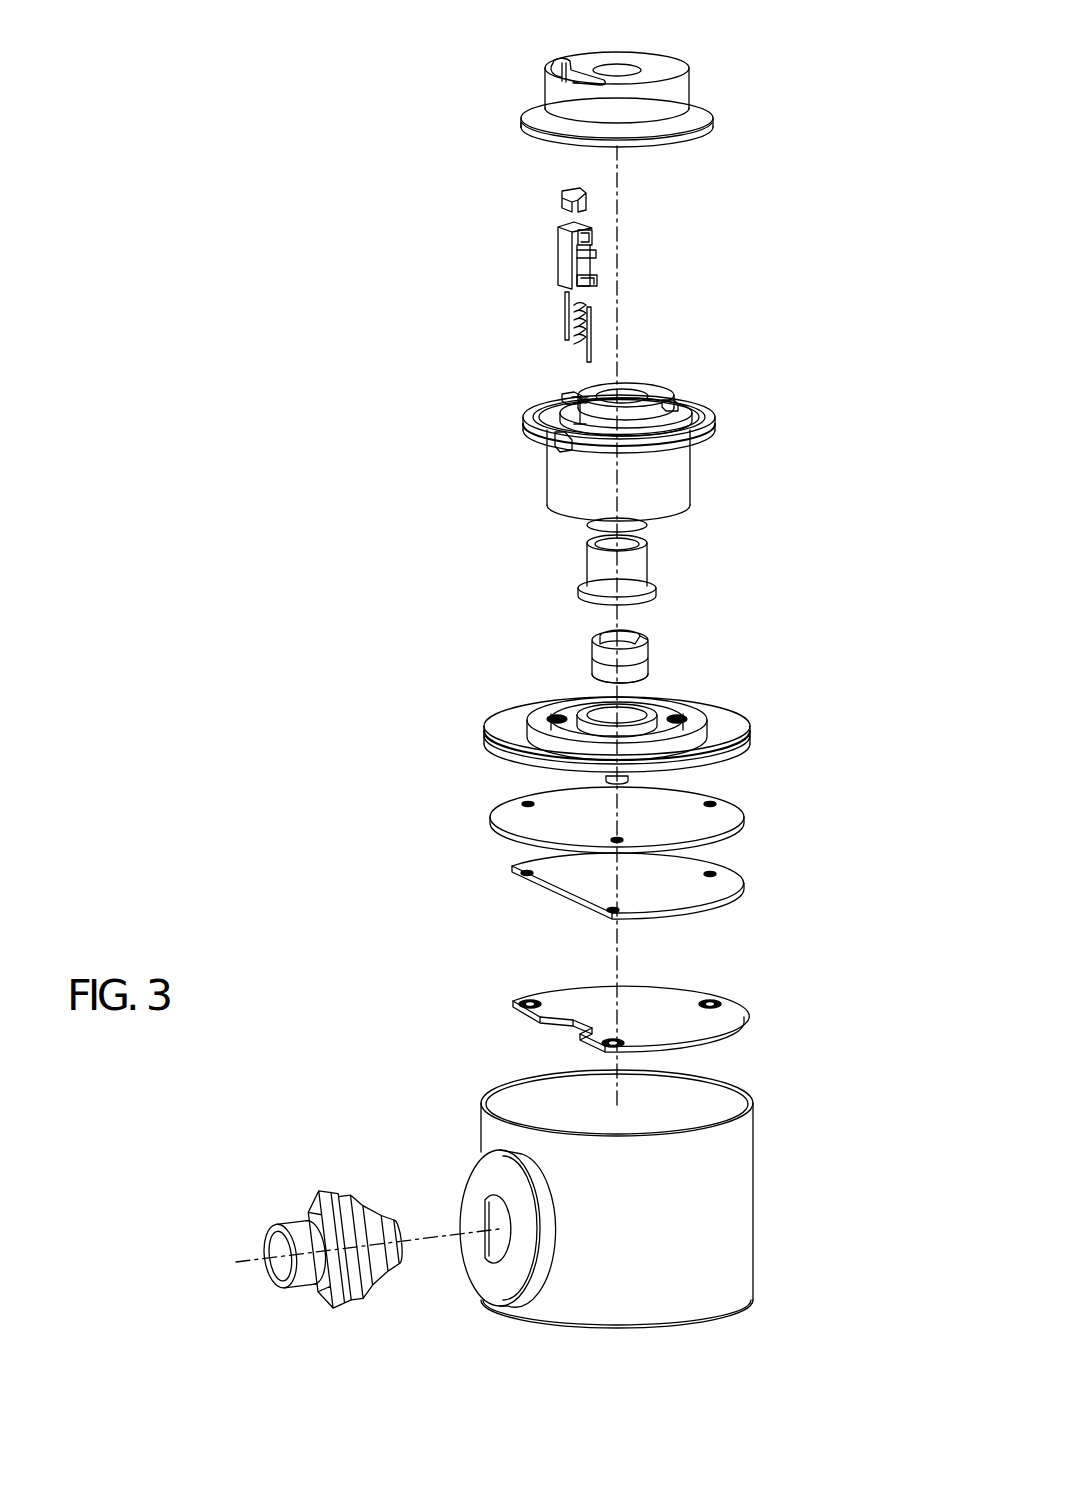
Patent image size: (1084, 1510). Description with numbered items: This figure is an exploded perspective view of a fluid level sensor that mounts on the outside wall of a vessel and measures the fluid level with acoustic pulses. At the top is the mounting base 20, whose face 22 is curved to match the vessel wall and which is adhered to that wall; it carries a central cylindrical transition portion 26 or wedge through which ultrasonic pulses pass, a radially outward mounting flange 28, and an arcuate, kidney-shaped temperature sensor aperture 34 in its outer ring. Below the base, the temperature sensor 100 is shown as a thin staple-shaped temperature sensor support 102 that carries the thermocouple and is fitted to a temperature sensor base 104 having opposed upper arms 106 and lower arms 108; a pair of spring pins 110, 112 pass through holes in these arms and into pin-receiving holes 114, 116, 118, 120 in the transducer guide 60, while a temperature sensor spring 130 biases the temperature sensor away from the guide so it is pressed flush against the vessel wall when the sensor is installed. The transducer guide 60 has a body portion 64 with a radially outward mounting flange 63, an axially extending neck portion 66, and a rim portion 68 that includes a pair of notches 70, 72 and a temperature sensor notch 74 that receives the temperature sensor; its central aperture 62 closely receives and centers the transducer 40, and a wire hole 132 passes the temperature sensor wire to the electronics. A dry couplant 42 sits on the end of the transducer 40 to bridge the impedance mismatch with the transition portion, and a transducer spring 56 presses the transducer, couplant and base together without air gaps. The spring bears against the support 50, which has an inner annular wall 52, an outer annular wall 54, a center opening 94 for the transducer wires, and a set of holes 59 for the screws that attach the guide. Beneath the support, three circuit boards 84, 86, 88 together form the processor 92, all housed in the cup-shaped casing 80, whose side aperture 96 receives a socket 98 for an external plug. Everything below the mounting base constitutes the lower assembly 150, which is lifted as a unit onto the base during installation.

The mounting base 20 is at (551, 88).
The face 22 is at (668, 66).
The transition portion 26 is at (616, 64).
The mounting flange 28 is at (700, 112).
The temperature sensor aperture 34 is at (565, 62).
The transducer 40 is at (640, 572).
The dry couplant 42 is at (590, 524).
The support 50 is at (735, 722).
The inner annular wall 52 is at (586, 702).
The outer annular wall 54 is at (540, 713).
The transducer spring 56 is at (648, 644).
The holes 59 is at (556, 714).
The transducer guide 60 is at (690, 470).
The central aperture 62 is at (622, 387).
The mounting flange 63 is at (710, 434).
The body portion 64 is at (675, 500).
The neck portion 66 is at (630, 442).
The rim portion 68 is at (664, 398).
The notch 70 is at (692, 406).
The notch 72 is at (565, 392).
The temperature sensor notch 74 is at (545, 420).
The casing 80 is at (748, 1190).
The circuit board 84 is at (725, 816).
The circuit board 86 is at (735, 888).
The circuit board 88 is at (720, 1024).
The processor 92 is at (470, 792).
The center opening 94 is at (650, 702).
The side aperture 96 is at (495, 1214).
The socket 98 is at (297, 1228).
The temperature sensor 100 is at (672, 183).
The temperature sensor support 102 is at (566, 192).
The temperature sensor base 104 is at (565, 258).
The upper arms 106 is at (546, 241).
The lower arms 108 is at (548, 274).
The pin 110 is at (565, 318).
The pin 112 is at (592, 316).
The pin-receiving hole 114 is at (572, 406).
The pin-receiving hole 116 is at (585, 400).
The pin-receiving hole 118 is at (545, 446).
The pin-receiving hole 120 is at (592, 446).
The temperature sensor spring 130 is at (578, 335).
The wire hole 132 is at (560, 455).
The lower assembly 150 is at (240, 1328).